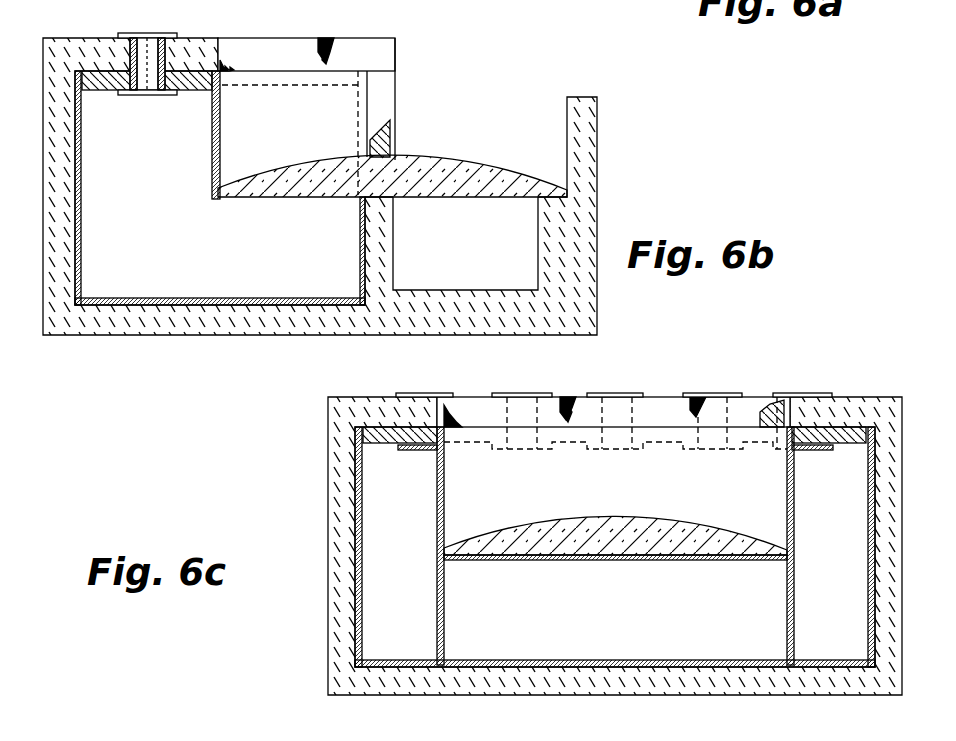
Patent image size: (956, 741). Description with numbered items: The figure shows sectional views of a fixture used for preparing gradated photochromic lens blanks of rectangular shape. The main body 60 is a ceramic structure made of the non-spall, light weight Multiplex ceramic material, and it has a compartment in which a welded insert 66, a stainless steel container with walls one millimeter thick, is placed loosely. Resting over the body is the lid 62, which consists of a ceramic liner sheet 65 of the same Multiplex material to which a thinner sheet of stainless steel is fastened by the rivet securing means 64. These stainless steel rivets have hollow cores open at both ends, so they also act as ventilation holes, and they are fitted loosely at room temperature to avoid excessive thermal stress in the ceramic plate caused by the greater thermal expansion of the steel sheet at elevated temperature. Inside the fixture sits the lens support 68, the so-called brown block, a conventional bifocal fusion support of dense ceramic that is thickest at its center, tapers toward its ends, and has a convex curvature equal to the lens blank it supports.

In FIG. 6B, the main body 60 is at (43, 318).
In FIG. 6C, the main body 60 is at (336, 628).
In FIG. 6B, the lid 62 is at (325, 38).
In FIG. 6C, the lid 62 is at (864, 400).
In FIG. 6B, the securing means 64 is at (128, 34).
In FIG. 6C, the securing means 64 is at (445, 394).
In FIG. 6B, the liner sheet 65 is at (190, 88).
In FIG. 6C, the liner sheet 65 is at (380, 447).
In FIG. 6B, the welded insert 66 is at (82, 257).
In FIG. 6C, the welded insert 66 is at (362, 617).
In FIG. 6B, the lens support 68 is at (456, 157).
In FIG. 6C, the lens support 68 is at (666, 520).